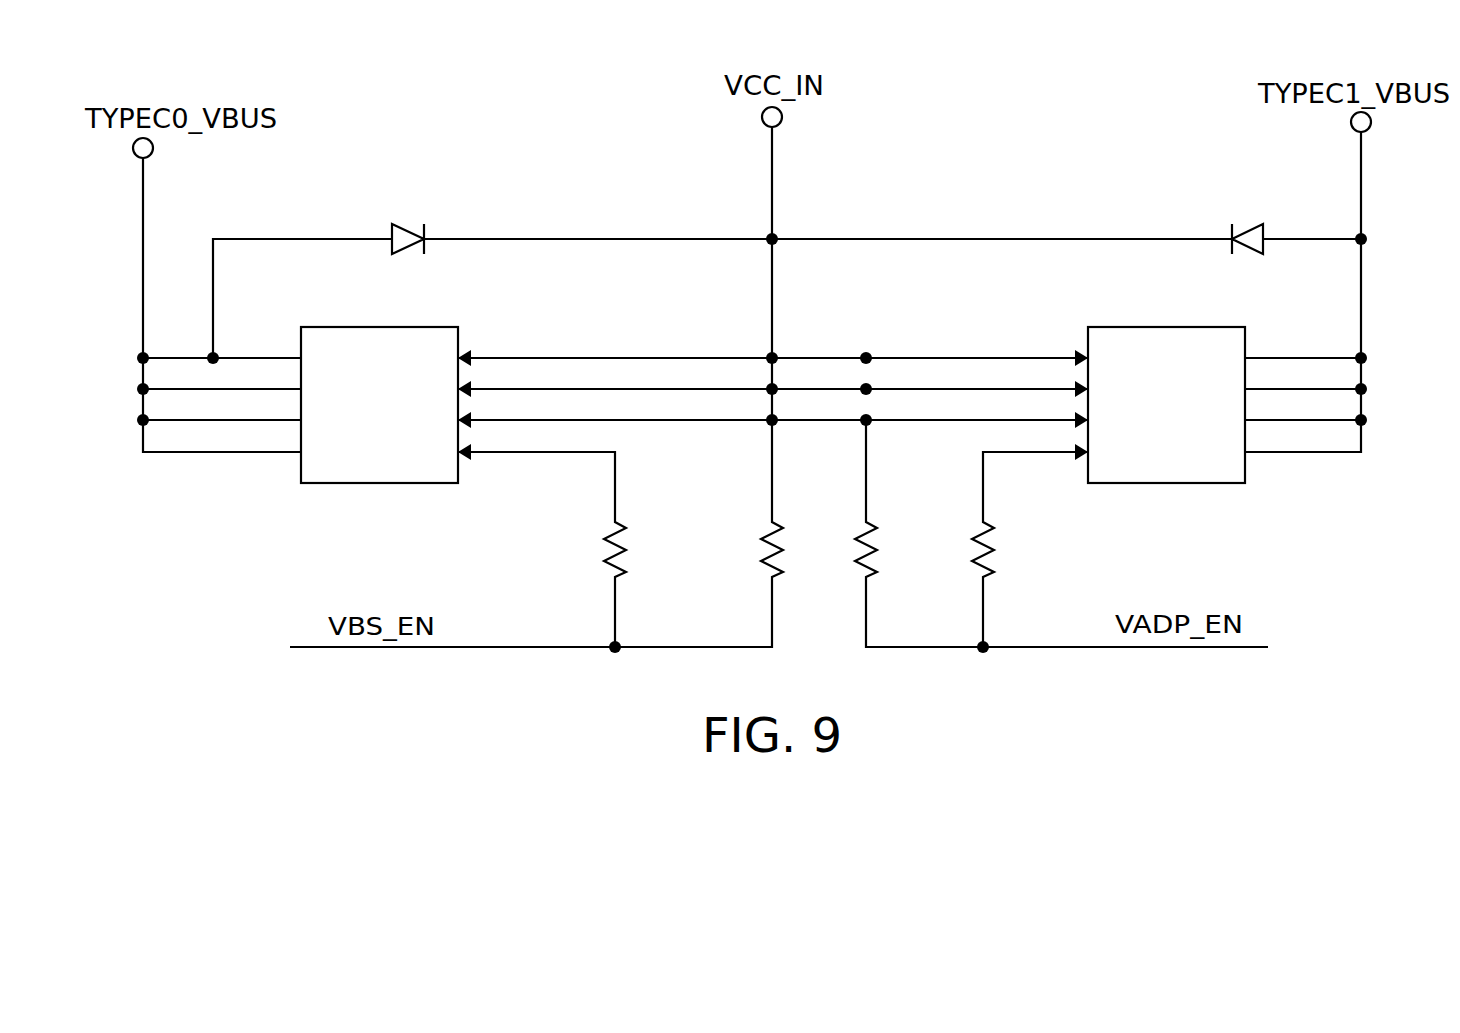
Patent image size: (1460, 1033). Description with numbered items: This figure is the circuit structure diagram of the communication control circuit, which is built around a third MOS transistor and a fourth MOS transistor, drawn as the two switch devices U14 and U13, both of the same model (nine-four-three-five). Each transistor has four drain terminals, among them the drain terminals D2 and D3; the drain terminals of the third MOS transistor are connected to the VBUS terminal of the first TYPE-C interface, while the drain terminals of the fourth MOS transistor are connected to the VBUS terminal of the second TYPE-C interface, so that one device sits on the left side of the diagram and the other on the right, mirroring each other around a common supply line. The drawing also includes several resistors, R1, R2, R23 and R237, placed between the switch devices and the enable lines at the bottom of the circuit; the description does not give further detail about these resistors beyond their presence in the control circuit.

The load switch IC 9435 U14 is at (330, 327).
The load switch IC 9435 U13 is at (1159, 327).
The drain terminal D3 is at (408, 239).
The drain terminal D2 is at (1251, 239).
The pull-down resistor 10K R1 is at (570, 549).
The pull-down resistor 10K R2 is at (746, 549).
The pull-down resistor 10K R23 is at (894, 549).
The pull-down resistor 10K R237 is at (1030, 549).